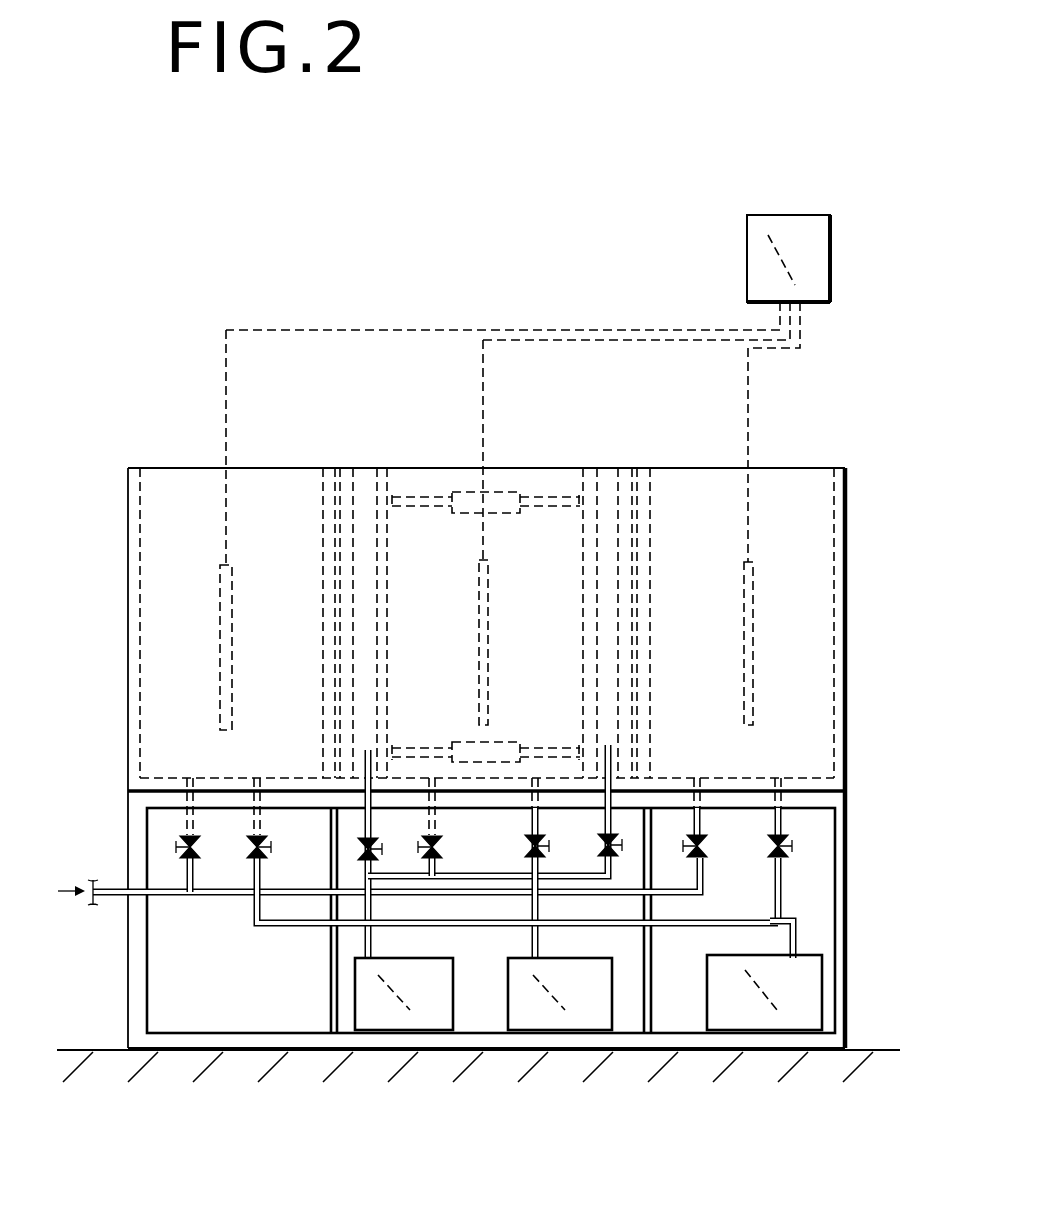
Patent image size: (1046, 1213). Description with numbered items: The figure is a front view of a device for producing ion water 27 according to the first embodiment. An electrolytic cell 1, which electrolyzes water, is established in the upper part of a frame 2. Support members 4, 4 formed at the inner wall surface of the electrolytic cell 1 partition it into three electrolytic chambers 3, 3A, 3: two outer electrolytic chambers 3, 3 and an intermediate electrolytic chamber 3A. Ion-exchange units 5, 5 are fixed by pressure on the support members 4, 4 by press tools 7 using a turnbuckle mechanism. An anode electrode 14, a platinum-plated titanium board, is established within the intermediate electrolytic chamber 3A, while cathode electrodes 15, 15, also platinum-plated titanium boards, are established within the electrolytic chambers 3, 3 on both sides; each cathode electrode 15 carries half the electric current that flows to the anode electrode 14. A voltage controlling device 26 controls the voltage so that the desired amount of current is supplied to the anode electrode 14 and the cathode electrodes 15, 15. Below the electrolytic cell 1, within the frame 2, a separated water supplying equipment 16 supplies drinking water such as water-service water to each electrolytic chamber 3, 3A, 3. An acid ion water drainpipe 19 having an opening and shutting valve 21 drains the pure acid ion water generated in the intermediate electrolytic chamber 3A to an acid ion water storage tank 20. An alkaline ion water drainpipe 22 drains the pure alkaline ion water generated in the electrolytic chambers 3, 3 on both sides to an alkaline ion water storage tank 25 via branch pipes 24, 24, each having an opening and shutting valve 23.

The electrolytic cell 1 is at (848, 581).
The frame 2 is at (130, 952).
The electrolytic chamber 3 is at (172, 548).
The intermediate electrolytic chamber 3A is at (530, 555).
The support member 4 is at (323, 490).
The ion-exchange unit 5 is at (365, 478).
The press tool 7 is at (465, 500).
The anode electrode 14 is at (478, 665).
The cathode electrode 15 is at (222, 655).
The separated water supplying equipment 16 is at (110, 888).
The acid ion water drainpipe 19 is at (535, 940).
The acid ion water storage tank 20 is at (575, 1030).
The opening and shutting valve 21 is at (528, 842).
The alkaline ion water drainpipe 22 is at (797, 935).
The opening and shutting valve 23 is at (250, 858).
The branch pipe 24 is at (257, 905).
The alkaline ion water storage tank 25 is at (815, 982).
The voltage controlling device 26 is at (793, 225).
The device for producing ion water 27 is at (583, 238).